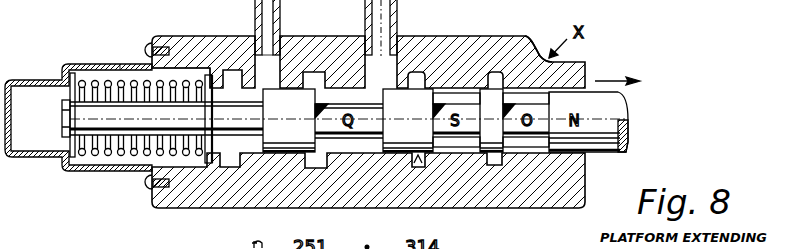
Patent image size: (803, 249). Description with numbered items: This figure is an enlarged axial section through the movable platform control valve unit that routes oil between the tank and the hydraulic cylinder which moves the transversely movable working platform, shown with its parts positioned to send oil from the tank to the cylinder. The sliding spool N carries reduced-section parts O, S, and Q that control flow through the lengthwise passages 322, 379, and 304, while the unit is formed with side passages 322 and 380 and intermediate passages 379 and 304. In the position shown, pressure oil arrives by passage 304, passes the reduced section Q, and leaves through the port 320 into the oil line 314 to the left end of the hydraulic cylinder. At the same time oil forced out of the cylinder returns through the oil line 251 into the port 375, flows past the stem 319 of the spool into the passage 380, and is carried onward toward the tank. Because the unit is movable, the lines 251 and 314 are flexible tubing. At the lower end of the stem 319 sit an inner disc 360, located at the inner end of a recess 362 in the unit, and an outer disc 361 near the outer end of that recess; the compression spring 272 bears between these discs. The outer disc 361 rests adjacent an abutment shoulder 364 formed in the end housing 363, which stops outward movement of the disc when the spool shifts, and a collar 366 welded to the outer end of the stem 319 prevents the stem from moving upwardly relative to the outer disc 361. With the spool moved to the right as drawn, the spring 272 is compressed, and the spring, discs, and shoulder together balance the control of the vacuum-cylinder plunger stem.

The oil line 251 is at (296, 0).
The compression spring 272 is at (130, 152).
The passage 304 is at (318, 160).
The oil line 314 is at (393, 13).
The stem 319 is at (248, 123).
The port 320 is at (394, 70).
The passage 322 is at (533, 38).
The disc 360 is at (186, 70).
The disc 361 is at (73, 160).
The recess 362 is at (196, 160).
The housing 363 is at (129, 64).
The abutment shoulder 364 is at (103, 64).
The collar 366 is at (66, 136).
The port 375 is at (268, 67).
The passage 379 is at (418, 163).
The passage 380 is at (246, 121).